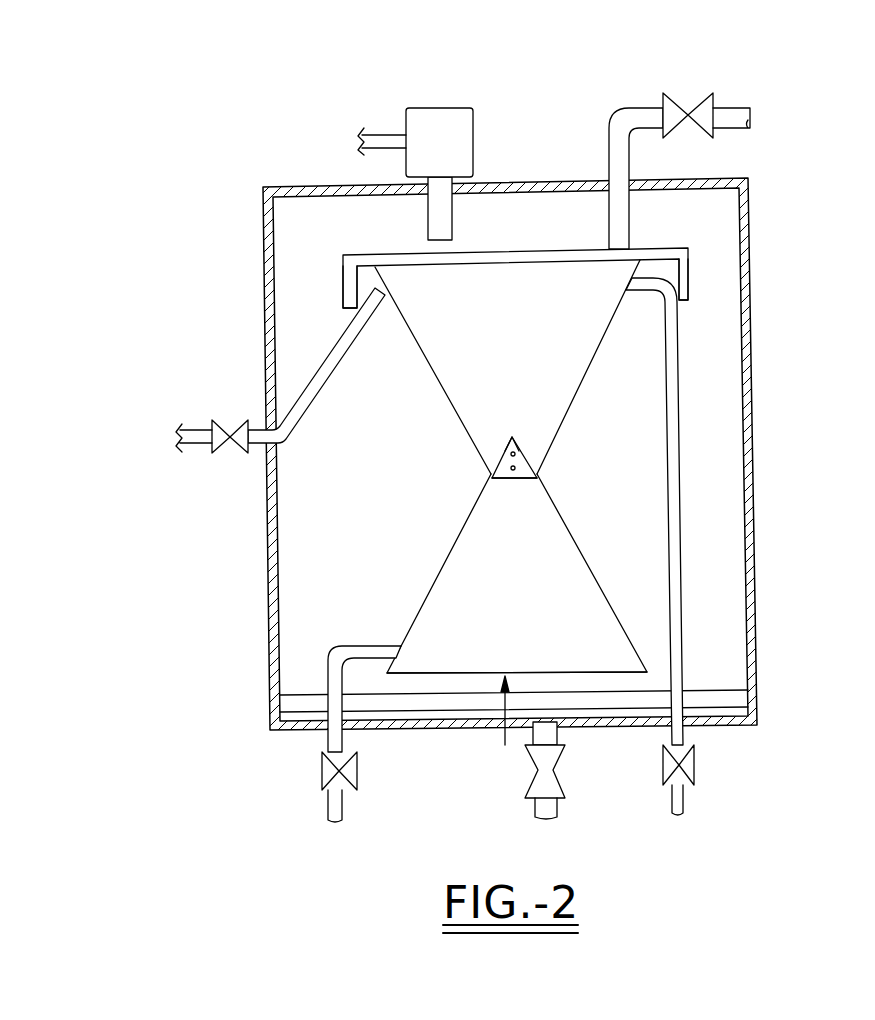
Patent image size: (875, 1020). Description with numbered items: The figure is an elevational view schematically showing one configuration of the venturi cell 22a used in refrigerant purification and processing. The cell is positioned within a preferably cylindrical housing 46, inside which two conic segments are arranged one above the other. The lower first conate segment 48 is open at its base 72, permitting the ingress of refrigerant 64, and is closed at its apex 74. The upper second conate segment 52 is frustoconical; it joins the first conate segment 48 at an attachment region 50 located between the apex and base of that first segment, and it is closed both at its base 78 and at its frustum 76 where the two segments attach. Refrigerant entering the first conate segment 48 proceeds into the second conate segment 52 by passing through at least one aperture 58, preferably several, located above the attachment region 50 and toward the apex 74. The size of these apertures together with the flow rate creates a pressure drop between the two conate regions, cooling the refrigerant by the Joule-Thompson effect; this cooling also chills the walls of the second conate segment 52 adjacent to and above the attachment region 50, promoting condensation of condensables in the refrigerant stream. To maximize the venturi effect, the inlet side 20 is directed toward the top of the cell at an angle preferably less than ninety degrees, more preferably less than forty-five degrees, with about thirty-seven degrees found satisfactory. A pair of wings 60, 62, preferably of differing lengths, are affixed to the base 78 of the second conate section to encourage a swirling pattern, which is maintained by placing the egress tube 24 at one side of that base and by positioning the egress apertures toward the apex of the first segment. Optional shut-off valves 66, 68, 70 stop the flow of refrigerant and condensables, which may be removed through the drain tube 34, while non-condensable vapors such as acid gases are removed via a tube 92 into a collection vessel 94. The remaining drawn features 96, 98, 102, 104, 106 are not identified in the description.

The venturi cell 22a is at (535, 141).
The inlet side 20 is at (330, 370).
The egress tube 24 is at (609, 150).
The drain tube 34 is at (556, 724).
The housing 46 is at (755, 483).
The first conate segment 48 is at (577, 542).
The attachment region 50 is at (539, 460).
The second conate segment 52 is at (567, 402).
The aperture 58 is at (510, 454).
The wing 60 is at (343, 275).
The wing 62 is at (688, 266).
The refrigerant 64 is at (505, 745).
The shut-off valve 66 is at (527, 787).
The shut-off valve 68 is at (680, 93).
The shut-off valve 70 is at (230, 420).
The base of first conate segment 72 is at (490, 670).
The apex of first conate segment 74 is at (512, 433).
The frustum 76 is at (505, 479).
The base of second conate segment 78 is at (540, 250).
The tube 92 is at (452, 223).
The collection vessel 94 is at (426, 108).
The outlet pipe 96 is at (342, 808).
The conduit 98 is at (355, 645).
The outlet pipe 102 is at (683, 806).
The valve 104 is at (690, 770).
The valve 106 is at (352, 768).